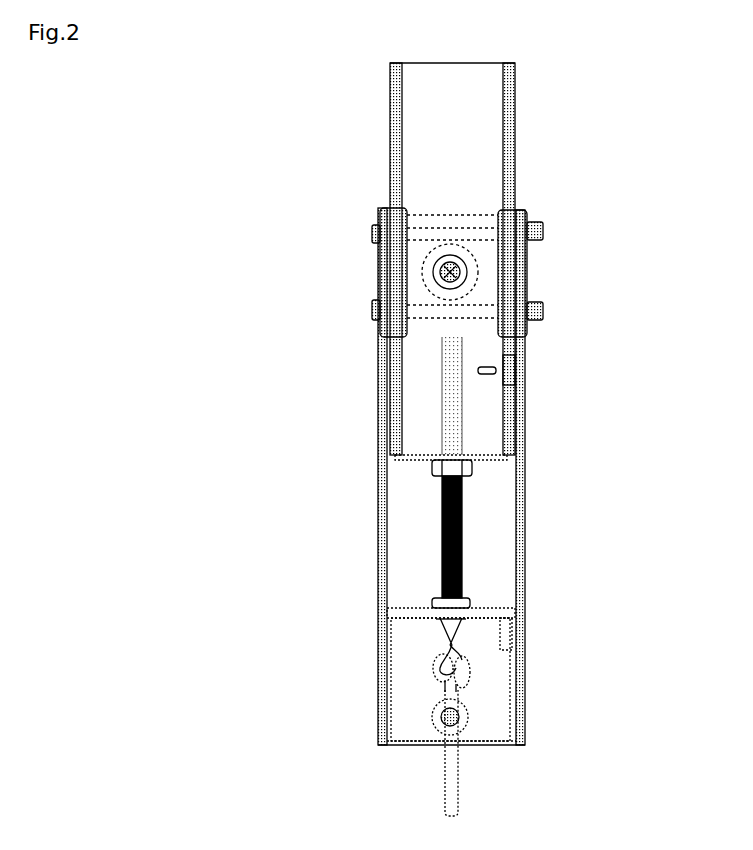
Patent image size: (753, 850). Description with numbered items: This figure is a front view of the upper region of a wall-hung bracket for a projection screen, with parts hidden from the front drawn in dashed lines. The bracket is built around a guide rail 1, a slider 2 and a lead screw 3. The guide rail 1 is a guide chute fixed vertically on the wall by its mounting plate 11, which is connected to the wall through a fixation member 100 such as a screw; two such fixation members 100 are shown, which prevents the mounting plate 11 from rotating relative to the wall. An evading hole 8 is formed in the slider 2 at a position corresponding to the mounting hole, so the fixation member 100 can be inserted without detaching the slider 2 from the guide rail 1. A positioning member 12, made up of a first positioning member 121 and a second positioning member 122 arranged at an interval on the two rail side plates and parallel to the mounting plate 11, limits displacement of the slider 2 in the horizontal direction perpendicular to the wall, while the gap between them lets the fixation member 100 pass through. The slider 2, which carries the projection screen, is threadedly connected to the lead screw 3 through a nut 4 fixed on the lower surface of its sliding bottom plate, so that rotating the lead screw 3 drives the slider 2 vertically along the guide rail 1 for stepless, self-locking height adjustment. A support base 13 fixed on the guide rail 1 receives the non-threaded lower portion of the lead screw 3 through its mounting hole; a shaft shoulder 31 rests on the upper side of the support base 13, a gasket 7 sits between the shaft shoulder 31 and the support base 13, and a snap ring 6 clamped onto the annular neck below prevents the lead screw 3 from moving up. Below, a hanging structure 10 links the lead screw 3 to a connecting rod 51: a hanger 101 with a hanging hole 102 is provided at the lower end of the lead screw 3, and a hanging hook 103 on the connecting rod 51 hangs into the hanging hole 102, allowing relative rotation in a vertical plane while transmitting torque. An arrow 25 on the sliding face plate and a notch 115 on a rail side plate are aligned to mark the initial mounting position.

The guide rail 1 is at (533, 448).
The slider 2 is at (481, 122).
The lead screw 3 is at (442, 520).
The nut 4 is at (435, 462).
The snap ring 6 is at (457, 620).
The gasket 7 is at (445, 613).
The evading hole 8 is at (433, 253).
The hanging structure 10 is at (549, 701).
The mounting plate 11 is at (660, 490).
The positioning member 12 is at (529, 244).
The support base 13 is at (502, 674).
The arrow 25 is at (497, 373).
The shaft shoulder 31 is at (440, 600).
The connecting rod 51 is at (452, 767).
The fixation member 100 is at (448, 272).
The hanger 101 is at (458, 645).
The hanging hole 102 is at (470, 675).
The hanging hook 103 is at (465, 688).
The notch 115 is at (522, 370).
The first positioning member 121 is at (402, 220).
The second positioning member 122 is at (564, 273).